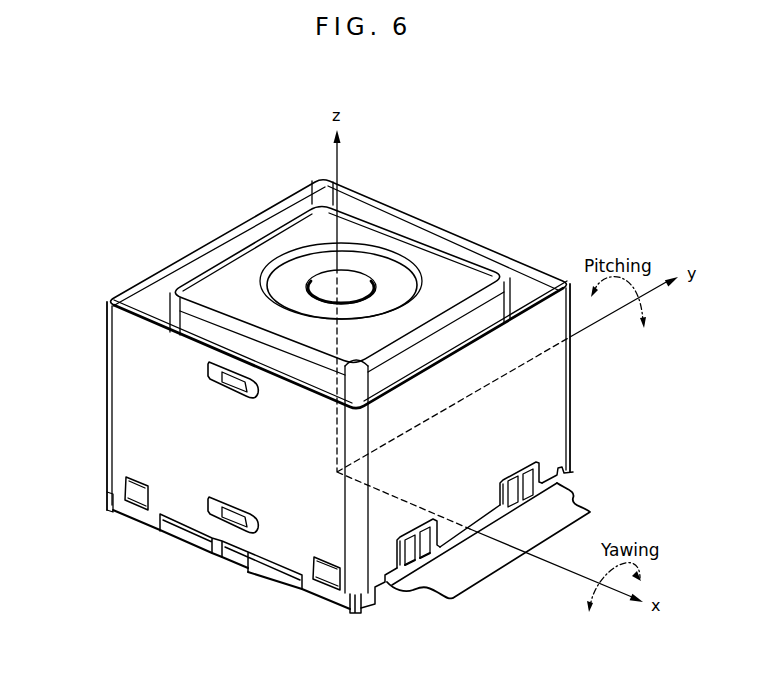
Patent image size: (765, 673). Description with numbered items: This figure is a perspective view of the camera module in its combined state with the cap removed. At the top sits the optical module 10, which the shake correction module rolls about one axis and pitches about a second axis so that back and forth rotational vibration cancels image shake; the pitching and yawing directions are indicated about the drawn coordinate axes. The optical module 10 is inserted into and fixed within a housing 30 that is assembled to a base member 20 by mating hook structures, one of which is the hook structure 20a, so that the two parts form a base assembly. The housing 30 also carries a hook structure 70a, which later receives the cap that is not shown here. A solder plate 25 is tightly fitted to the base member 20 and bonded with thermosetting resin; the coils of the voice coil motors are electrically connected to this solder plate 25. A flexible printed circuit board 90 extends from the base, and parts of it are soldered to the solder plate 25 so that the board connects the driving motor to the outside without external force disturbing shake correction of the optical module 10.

The optical module 10 is at (447, 270).
The housing 30 is at (118, 393).
The hook structure 70a is at (225, 390).
The hook structure 20a is at (232, 518).
The base member 20 is at (388, 586).
The solder plate 25 is at (414, 563).
The flexible printed circuit board 90 is at (453, 577).